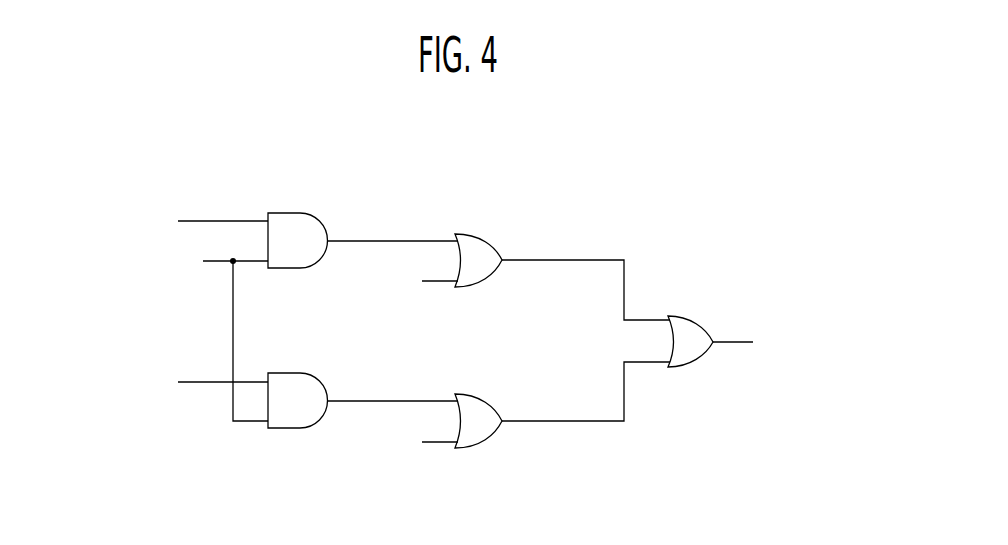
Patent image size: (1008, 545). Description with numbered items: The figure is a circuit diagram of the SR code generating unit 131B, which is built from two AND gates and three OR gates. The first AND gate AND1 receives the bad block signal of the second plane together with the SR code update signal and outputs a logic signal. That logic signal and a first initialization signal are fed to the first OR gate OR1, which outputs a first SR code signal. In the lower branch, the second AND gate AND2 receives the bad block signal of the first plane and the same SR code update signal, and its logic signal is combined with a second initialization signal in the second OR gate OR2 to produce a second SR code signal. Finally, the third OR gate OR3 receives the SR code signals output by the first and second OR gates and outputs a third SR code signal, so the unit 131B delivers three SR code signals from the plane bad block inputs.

The SR code generating unit 131B is at (662, 158).
The first AND gate AND1 is at (297, 228).
The second AND gate AND2 is at (298, 388).
The first OR gate OR1 is at (478, 247).
The second OR gate OR2 is at (478, 408).
The third OR gate OR3 is at (690, 329).